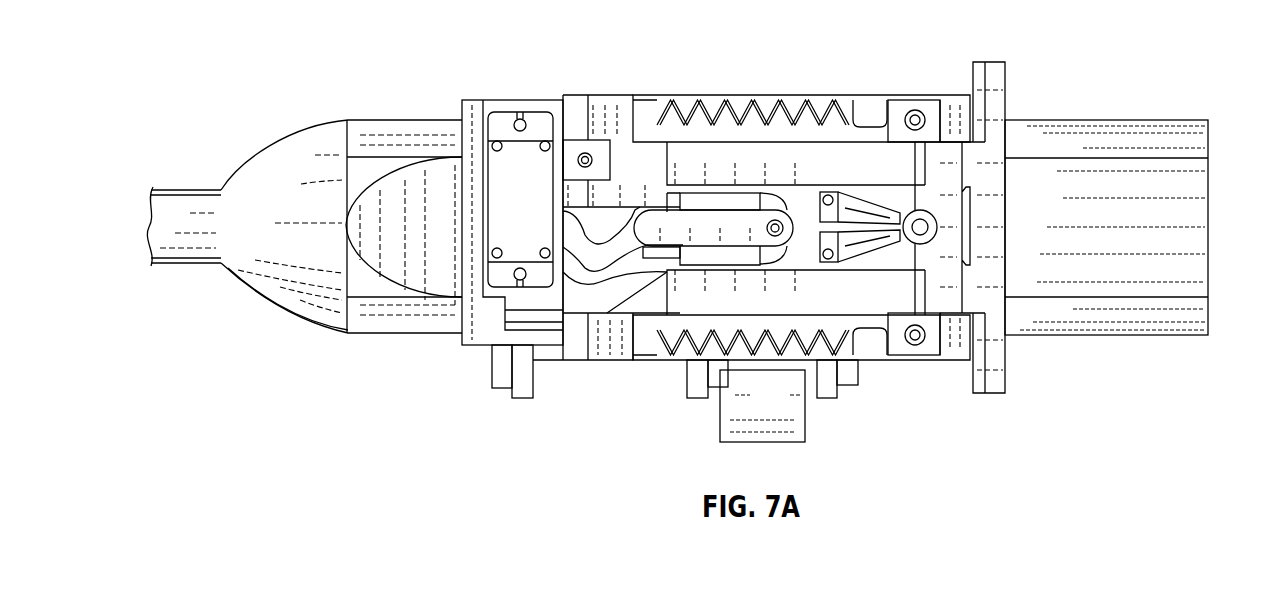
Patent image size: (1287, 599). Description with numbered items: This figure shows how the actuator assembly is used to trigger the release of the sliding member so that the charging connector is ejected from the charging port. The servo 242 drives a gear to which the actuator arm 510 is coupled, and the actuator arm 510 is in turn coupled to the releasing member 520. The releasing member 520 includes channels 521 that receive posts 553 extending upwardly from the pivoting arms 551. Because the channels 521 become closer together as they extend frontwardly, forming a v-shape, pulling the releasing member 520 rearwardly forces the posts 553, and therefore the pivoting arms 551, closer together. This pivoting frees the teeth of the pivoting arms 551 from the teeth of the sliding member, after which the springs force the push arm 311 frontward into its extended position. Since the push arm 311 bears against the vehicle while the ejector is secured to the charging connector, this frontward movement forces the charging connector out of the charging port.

The servo 242 is at (495, 170).
The actuator arm 510 is at (667, 213).
The releasing member 520 is at (787, 195).
The posts 553 is at (828, 192).
The pivoting arms 551 is at (850, 200).
The channels 521 is at (888, 193).
The push arm 311 is at (993, 218).